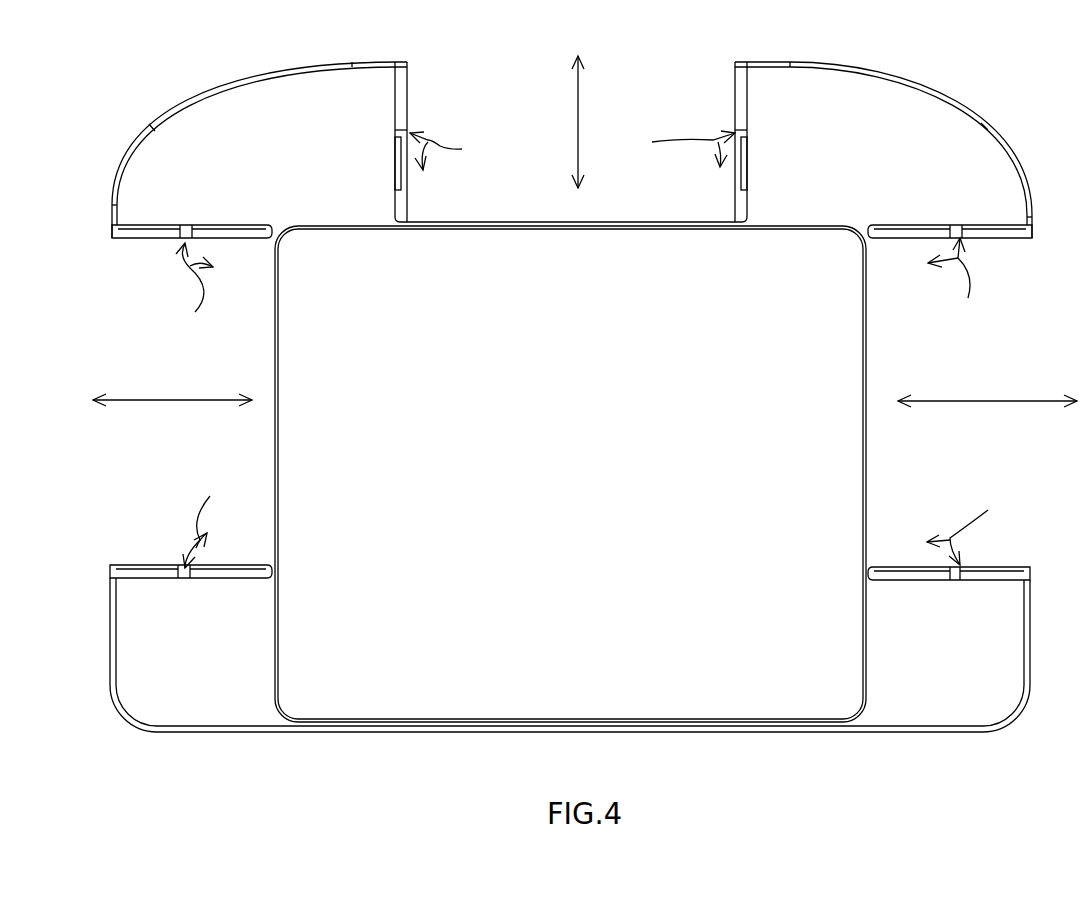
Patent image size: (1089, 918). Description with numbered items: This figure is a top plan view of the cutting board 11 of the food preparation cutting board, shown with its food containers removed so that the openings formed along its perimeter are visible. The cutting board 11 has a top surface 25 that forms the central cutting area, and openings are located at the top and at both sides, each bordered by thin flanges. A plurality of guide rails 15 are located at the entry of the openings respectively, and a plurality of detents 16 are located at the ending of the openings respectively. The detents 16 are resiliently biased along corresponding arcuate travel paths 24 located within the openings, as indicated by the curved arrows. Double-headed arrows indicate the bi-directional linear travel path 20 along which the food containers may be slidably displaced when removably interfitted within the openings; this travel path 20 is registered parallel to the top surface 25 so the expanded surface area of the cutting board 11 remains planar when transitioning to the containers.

The cutting board 11 is at (1017, 112).
The guide rails 15 is at (405, 98).
The detents 16 is at (405, 185).
The bi-directional linear travel path 20 is at (577, 100).
The arcuate travel paths 24 is at (592, 343).
The top surface 25 is at (589, 477).